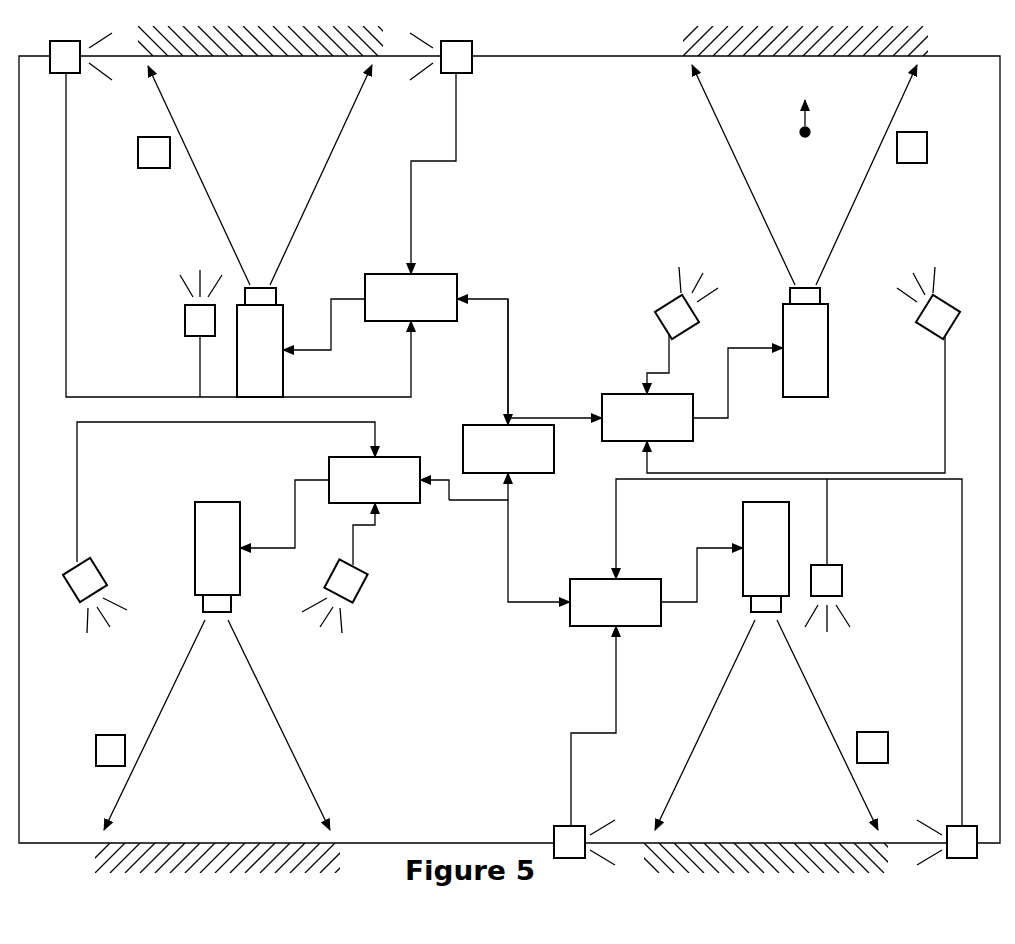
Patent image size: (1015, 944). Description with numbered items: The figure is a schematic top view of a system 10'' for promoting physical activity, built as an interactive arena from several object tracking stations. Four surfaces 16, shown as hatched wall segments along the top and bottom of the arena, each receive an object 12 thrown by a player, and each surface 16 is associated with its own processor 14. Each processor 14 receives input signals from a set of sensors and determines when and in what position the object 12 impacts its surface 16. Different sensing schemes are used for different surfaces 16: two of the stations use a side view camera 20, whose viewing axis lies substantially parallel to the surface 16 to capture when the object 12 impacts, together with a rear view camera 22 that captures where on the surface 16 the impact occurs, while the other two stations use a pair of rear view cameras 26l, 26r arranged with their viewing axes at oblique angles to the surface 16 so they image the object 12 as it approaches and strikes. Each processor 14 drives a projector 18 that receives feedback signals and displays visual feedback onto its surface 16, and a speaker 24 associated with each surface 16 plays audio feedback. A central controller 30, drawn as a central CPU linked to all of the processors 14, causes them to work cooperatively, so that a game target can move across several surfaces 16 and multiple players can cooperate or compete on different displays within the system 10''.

The system for promoting physical activity 10'' is at (574, 158).
The object 12 is at (810, 130).
The processor 14 is at (440, 282).
The surface 16 is at (213, 56).
The projector 18 is at (283, 372).
The side view camera 20 is at (58, 73).
The rear view camera 22 is at (185, 330).
The speaker 24 is at (150, 168).
The left rear view camera 26l is at (658, 320).
The right rear view camera 26r is at (952, 310).
The central controller 30 is at (555, 468).